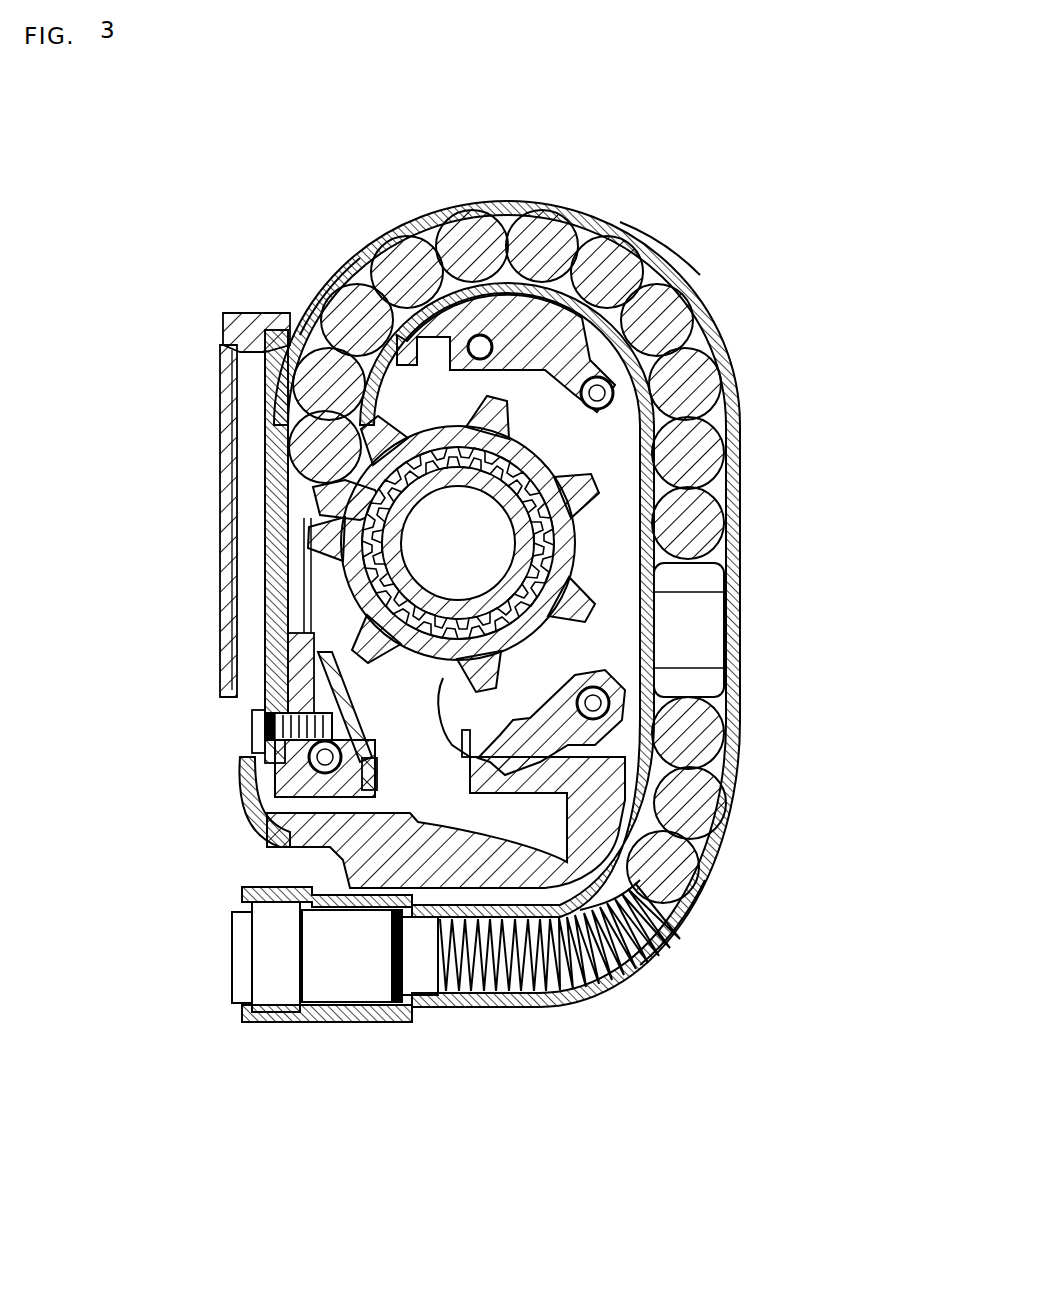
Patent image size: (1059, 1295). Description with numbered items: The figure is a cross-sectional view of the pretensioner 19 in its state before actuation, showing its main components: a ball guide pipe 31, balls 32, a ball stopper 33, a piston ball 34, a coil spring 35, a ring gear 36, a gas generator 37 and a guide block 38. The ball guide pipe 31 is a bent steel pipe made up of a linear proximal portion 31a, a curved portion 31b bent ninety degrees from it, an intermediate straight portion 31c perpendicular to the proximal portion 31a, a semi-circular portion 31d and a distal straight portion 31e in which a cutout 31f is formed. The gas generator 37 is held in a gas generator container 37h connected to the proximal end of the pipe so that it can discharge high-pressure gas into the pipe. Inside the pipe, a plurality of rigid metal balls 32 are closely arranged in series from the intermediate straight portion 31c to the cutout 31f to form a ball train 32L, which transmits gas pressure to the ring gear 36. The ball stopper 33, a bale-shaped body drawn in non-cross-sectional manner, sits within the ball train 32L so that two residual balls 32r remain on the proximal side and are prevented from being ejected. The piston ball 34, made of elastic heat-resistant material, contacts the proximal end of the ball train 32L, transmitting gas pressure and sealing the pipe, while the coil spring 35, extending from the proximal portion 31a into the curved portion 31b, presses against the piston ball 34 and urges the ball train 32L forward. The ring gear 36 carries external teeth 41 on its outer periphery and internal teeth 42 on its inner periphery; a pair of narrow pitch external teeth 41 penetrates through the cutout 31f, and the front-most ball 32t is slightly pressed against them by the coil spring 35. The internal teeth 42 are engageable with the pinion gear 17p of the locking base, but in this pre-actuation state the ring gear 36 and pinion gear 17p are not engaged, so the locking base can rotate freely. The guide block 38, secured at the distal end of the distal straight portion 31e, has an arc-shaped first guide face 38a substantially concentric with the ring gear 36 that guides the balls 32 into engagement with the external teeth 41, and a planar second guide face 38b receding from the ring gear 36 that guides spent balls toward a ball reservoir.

The pretensioner 19 is at (696, 194).
The ball guide pipe 31 is at (743, 500).
The proximal portion 31a is at (470, 1008).
The curved portion 31b is at (672, 930).
The intermediate straight portion 31c is at (735, 548).
The semi-circular portion 31d is at (683, 283).
The distal straight portion 31e is at (258, 568).
The cutout 31f is at (338, 385).
The balls 32 is at (738, 405).
The ball train 32L is at (705, 342).
The front-most ball 32t is at (305, 457).
The residual balls 32r is at (712, 735).
The ball stopper 33 is at (718, 628).
The piston ball 34 is at (700, 875).
The coil spring 35 is at (535, 1005).
The ring gear 36 is at (522, 657).
The gas generator 37 is at (336, 972).
The gas generator container 37h is at (388, 1012).
The guide block 38 is at (258, 840).
The first guide face 38a is at (270, 705).
The second guide face 38b is at (345, 695).
The external teeth 41 is at (322, 398).
The pinion gear 17p is at (524, 456).
The internal teeth 42 is at (536, 526).